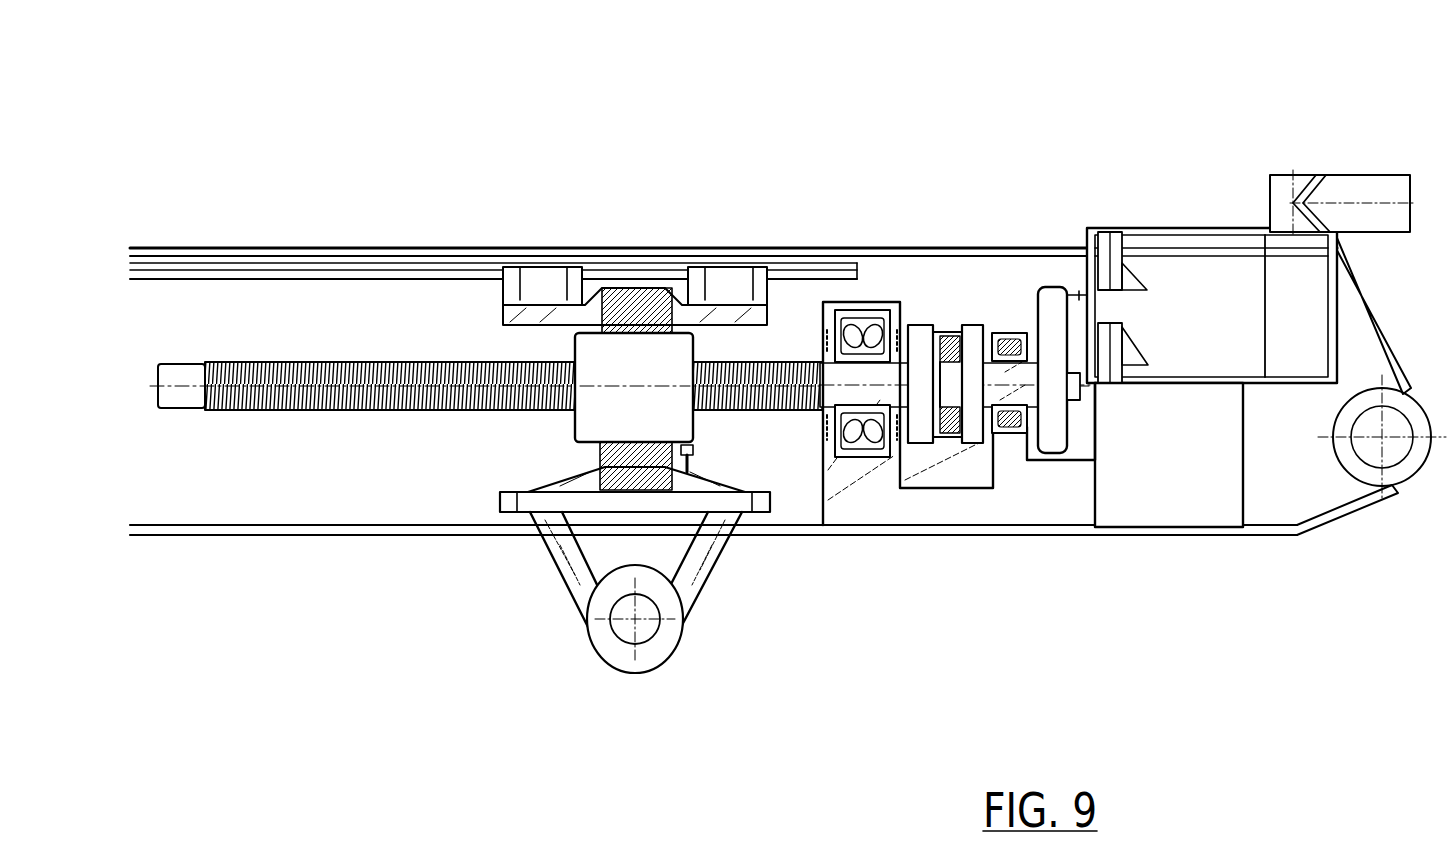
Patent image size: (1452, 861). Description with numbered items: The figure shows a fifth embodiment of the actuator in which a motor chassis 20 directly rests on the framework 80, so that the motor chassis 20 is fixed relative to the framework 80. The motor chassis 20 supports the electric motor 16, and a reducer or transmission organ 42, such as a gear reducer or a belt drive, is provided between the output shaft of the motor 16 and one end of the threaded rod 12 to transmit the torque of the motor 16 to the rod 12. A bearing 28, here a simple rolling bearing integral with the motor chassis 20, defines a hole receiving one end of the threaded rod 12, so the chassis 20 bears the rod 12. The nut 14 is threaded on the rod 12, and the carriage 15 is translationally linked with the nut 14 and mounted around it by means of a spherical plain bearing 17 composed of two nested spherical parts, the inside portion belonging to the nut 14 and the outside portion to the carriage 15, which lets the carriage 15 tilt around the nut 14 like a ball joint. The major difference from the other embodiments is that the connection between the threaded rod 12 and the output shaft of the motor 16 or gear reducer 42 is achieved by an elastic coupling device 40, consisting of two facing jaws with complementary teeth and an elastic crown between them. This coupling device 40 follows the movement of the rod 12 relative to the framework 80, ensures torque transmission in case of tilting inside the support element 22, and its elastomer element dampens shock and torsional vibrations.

The threaded rod 12 is at (343, 412).
The nut 14 is at (634, 387).
The carriage 15 is at (680, 550).
The electric motor 16 is at (1251, 276).
The spherical plain bearing 17 is at (560, 459).
The motor chassis 20 is at (1169, 455).
The support element 22 is at (892, 280).
The bearing 28 is at (1015, 298).
The elastic coupling device 40 is at (964, 293).
The gear reducer 42 is at (1100, 452).
The framework 80 is at (1250, 528).